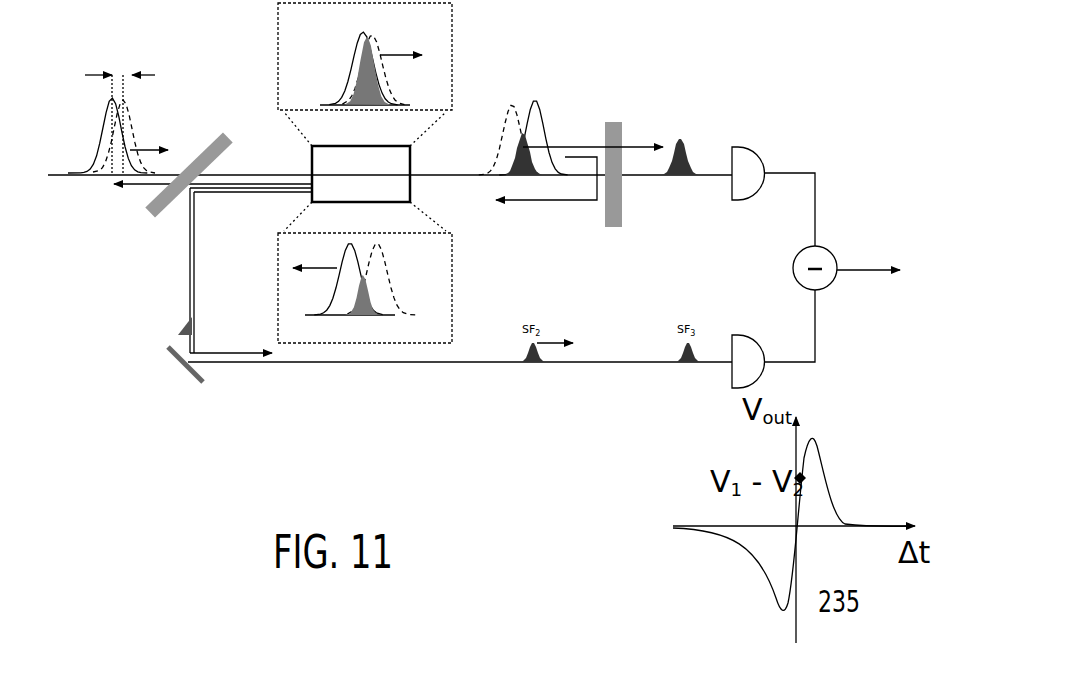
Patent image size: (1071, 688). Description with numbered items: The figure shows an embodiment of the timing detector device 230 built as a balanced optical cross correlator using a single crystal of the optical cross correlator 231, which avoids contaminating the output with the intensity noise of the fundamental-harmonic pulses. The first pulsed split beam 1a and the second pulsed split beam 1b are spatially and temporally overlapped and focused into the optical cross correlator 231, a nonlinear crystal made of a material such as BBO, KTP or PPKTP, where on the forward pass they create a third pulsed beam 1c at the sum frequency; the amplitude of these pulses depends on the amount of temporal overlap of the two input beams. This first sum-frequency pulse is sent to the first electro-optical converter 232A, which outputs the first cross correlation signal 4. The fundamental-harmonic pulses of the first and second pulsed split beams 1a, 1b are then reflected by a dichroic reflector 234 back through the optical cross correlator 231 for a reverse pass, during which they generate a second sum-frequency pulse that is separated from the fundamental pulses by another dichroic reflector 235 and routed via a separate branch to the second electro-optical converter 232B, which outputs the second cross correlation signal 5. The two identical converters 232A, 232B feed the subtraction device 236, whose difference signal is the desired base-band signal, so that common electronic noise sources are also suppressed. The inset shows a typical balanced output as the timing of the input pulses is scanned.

The first pulsed split beam 1a is at (130, 113).
The second pulsed split beam 1b is at (104, 124).
The third pulsed beam 1c is at (680, 165).
The timing detector device 230 is at (673, 67).
The optical cross correlator 231 is at (365, 173).
The first electro-optical converter 232A is at (757, 155).
The second electro-optical converter 232B is at (759, 345).
The dichroic reflector 234 is at (571, 184).
The dichroic reflector 235 is at (171, 192).
The subtraction device 236 is at (850, 260).
The first cross correlation signal 4 is at (800, 209).
The second cross correlation signal 5 is at (800, 326).